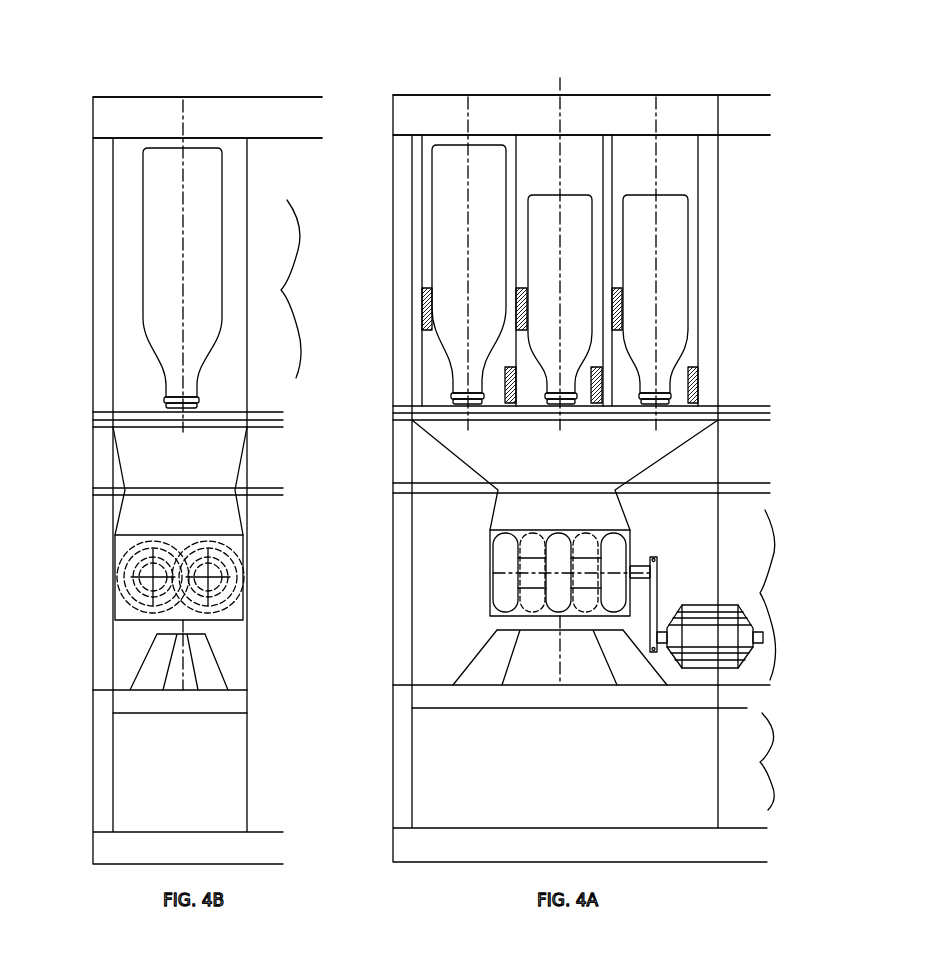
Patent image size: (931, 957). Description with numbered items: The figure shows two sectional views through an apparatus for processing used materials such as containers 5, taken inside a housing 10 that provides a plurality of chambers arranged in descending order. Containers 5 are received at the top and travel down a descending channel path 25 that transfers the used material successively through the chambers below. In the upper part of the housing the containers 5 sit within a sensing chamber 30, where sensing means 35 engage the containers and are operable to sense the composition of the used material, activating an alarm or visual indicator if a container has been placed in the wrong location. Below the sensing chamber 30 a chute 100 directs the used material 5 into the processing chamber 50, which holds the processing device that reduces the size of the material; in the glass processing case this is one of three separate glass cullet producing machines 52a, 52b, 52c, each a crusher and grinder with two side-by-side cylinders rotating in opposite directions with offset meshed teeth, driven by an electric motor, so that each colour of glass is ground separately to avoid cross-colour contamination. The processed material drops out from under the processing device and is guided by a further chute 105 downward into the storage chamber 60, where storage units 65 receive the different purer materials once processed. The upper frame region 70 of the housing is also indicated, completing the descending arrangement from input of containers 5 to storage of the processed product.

In FIG. 4B, the containers 5 is at (198, 180).
In FIG. 4A, the containers 5 is at (475, 165).
In FIG. 4B, the housing 10 is at (118, 853).
In FIG. 4A, the housing 10 is at (432, 850).
In FIG. 4B, the descending channel path 25 is at (133, 635).
In FIG. 4B, the sensing chamber 30 is at (305, 289).
In FIG. 4A, the sensing means 35 is at (777, 352).
In FIG. 4A, the processing chamber 50 is at (787, 595).
In FIG. 4B, the glass cullet producing machine 52a is at (247, 575).
In FIG. 4A, the glass cullet producing machine 52a is at (493, 575).
In FIG. 4B, the glass cullet producing machine 52b is at (208, 577).
In FIG. 4A, the glass cullet producing machine 52b is at (544, 572).
In FIG. 4A, the glass cullet producing machine 52c is at (667, 600).
In FIG. 4A, the storage chamber 60 is at (787, 761).
In FIG. 4B, the storage units 65 is at (213, 777).
In FIG. 4A, the storage units 65 is at (457, 765).
In FIG. 4B, the top frame / housing top 70 is at (293, 120).
In FIG. 4A, the top frame / housing top 70 is at (623, 102).
In FIG. 4B, the chutes 100 is at (247, 463).
In FIG. 4A, the chutes 100 is at (668, 455).
In FIG. 4B, the chutes 105 is at (220, 662).
In FIG. 4A, the chutes 105 is at (480, 652).